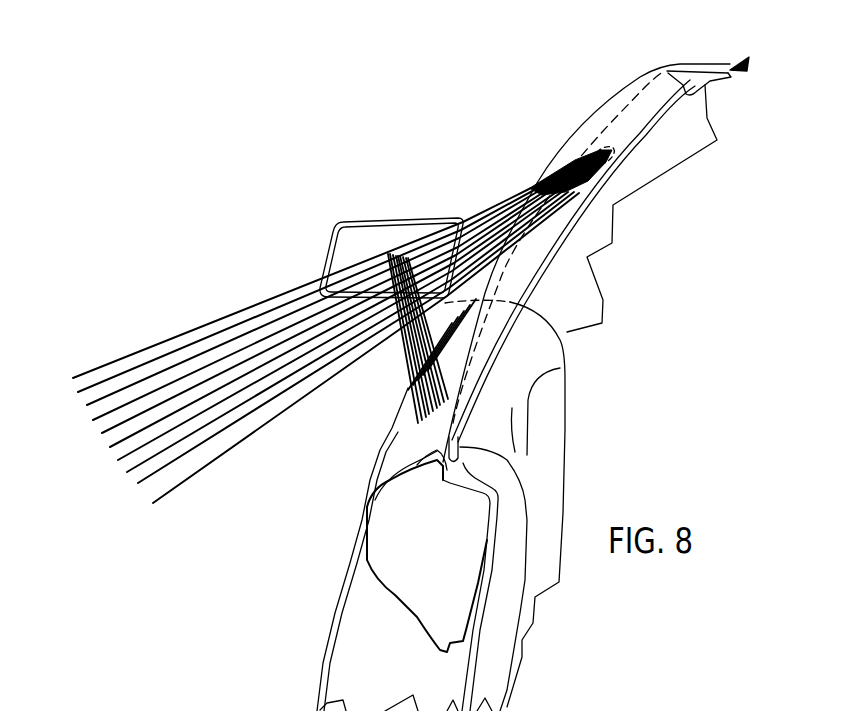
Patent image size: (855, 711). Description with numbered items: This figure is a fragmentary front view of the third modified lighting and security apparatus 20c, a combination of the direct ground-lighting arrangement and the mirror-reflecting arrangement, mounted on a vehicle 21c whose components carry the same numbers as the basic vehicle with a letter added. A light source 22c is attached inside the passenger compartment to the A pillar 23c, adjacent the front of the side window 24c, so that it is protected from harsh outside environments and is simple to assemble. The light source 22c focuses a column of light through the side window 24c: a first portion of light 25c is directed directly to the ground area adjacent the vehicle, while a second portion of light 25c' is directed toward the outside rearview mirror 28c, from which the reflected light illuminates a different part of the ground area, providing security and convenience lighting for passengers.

The lighting and security apparatus 20c is at (645, 186).
The vehicle 21c is at (748, 62).
The light source 22c is at (593, 145).
The A pillar 23c is at (644, 82).
The side window 24c is at (653, 141).
The first portion of light 25c is at (342, 326).
The second portion of light 25c' is at (421, 291).
The outside rearview mirror 28c is at (334, 238).